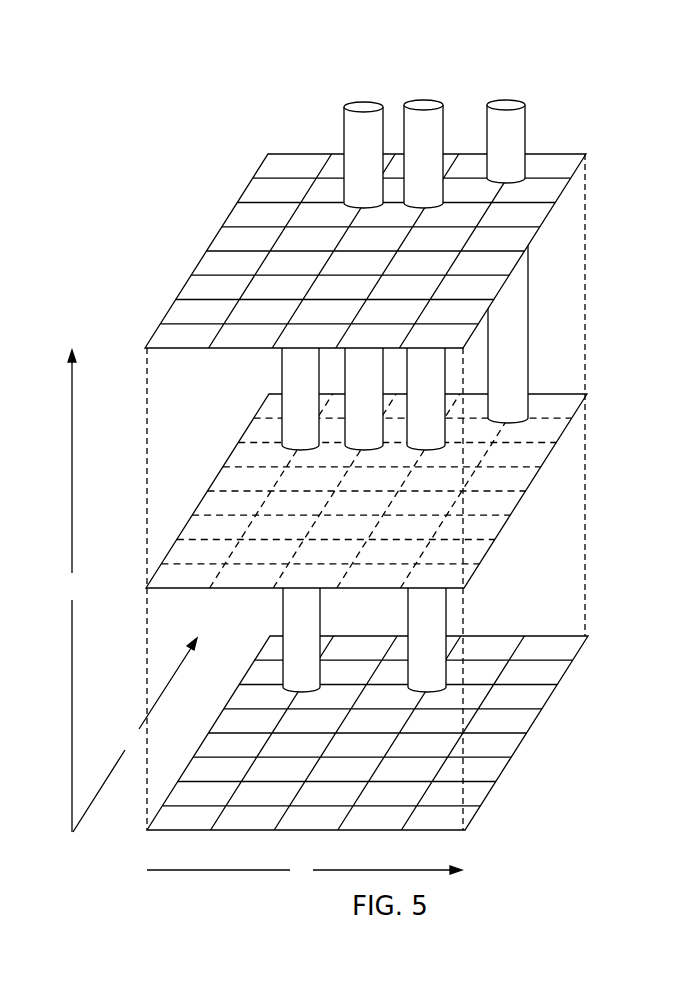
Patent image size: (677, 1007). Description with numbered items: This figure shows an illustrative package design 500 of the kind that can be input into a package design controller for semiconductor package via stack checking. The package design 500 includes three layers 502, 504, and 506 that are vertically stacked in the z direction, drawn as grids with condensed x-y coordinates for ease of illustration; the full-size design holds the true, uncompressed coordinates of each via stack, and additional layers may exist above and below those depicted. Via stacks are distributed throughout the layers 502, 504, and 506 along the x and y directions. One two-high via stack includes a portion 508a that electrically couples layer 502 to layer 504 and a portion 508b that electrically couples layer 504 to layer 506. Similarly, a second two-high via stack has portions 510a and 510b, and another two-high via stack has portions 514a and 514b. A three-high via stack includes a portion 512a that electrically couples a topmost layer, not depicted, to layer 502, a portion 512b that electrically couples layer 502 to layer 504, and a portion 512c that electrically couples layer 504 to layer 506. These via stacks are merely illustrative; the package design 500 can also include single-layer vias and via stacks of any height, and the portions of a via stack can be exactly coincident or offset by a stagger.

The package design 500 is at (116, 130).
The layer 502 is at (547, 152).
The layer 504 is at (566, 393).
The layer 506 is at (587, 635).
The portion of via stack 508a is at (281, 375).
The portion of via stack 508b is at (282, 603).
The portion of via stack 510a is at (344, 115).
The portion of via stack 510b is at (369, 447).
The portion of via stack 512a is at (427, 101).
The portion of via stack 512b is at (436, 447).
The portion of via stack 512c is at (447, 608).
The portion of via stack 514a is at (522, 101).
The portion of via stack 514b is at (528, 270).